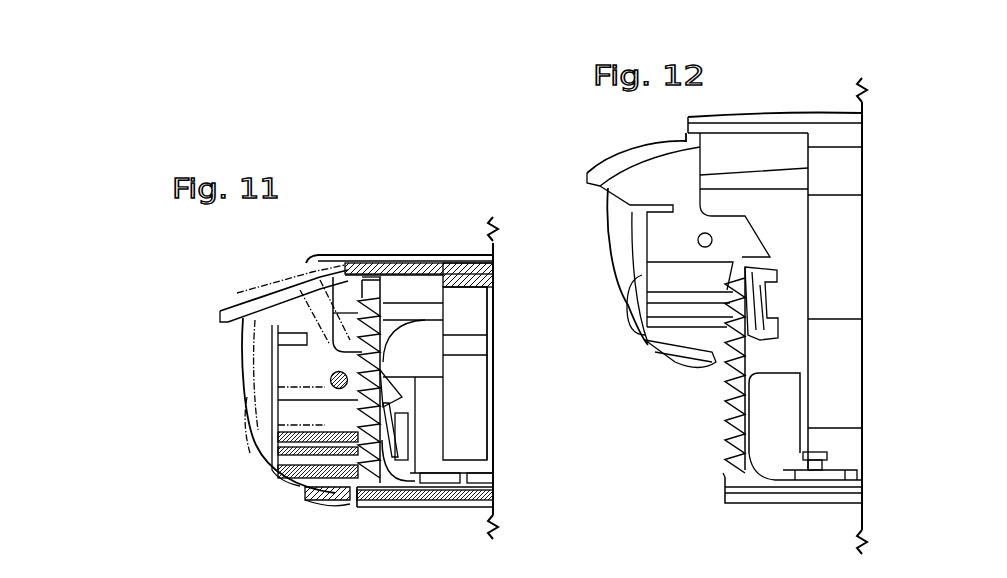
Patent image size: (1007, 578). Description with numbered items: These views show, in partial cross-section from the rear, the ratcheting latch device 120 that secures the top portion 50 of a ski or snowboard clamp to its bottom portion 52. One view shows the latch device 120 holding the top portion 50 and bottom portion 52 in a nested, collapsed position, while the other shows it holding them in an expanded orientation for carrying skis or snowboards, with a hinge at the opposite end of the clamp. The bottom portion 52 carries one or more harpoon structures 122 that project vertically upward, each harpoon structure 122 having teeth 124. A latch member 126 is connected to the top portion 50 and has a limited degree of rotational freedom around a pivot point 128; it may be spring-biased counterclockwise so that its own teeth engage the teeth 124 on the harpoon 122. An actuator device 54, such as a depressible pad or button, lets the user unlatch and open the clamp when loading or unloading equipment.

In FIG. 11, the top portion 50 is at (402, 378).
In FIG. 12, the top portion 50 is at (782, 112).
In FIG. 11, the bottom portion 52 is at (392, 508).
In FIG. 12, the bottom portion 52 is at (787, 510).
In FIG. 11, the actuator device 54 is at (243, 373).
In FIG. 12, the actuator device 54 is at (607, 242).
In FIG. 11, the ratcheting latch device 120 is at (160, 320).
In FIG. 12, the ratcheting latch device 120 is at (552, 178).
In FIG. 11, the harpoon structure 122 is at (415, 320).
In FIG. 12, the harpoon structure 122 is at (760, 420).
In FIG. 11, the teeth 124 is at (312, 455).
In FIG. 12, the teeth 124 is at (725, 398).
In FIG. 11, the latch member 126 is at (305, 310).
In FIG. 12, the latch member 126 is at (640, 183).
In FIG. 11, the pivot point 128 is at (348, 376).
In FIG. 12, the pivot point 128 is at (712, 238).